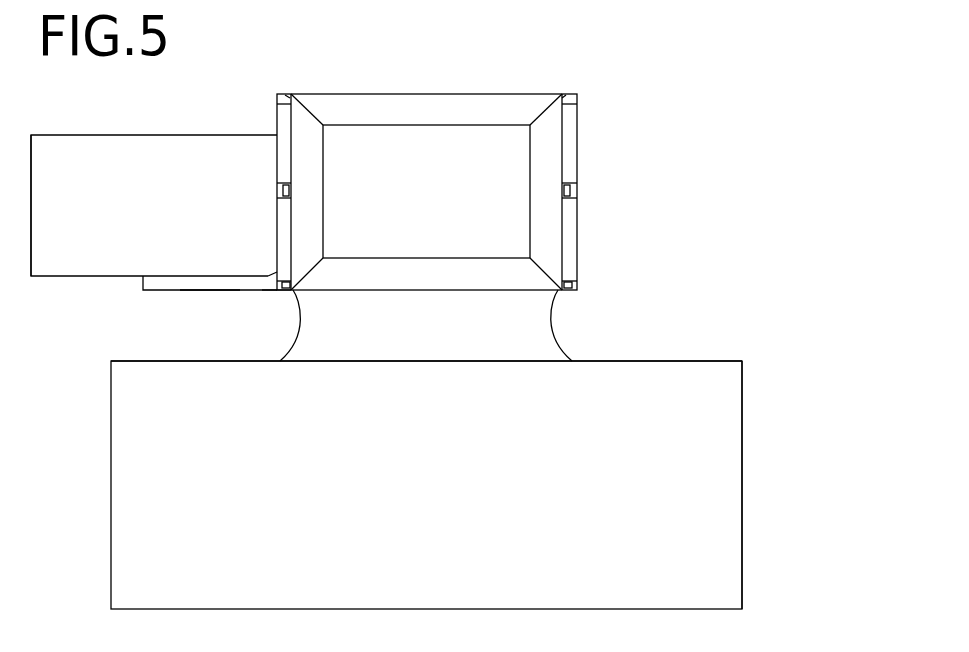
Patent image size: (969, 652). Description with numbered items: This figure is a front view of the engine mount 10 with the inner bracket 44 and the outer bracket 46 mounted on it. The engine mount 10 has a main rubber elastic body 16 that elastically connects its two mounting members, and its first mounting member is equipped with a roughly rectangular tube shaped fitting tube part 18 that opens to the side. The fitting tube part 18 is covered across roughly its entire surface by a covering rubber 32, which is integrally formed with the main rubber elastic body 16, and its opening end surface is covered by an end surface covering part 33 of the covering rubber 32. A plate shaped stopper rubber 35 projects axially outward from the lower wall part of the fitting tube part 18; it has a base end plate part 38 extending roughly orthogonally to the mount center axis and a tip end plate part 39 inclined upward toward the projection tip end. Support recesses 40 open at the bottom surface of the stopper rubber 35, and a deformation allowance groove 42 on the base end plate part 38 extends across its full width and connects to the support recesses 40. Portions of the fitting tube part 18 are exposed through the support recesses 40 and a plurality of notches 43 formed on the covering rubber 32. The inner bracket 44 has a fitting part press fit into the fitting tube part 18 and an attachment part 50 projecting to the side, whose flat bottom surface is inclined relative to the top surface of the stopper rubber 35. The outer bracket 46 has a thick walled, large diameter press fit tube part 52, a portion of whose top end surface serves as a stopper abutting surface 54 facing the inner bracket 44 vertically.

The engine mount 10 is at (452, 171).
The main rubber elastic body 16 is at (573, 350).
The fitting tube part 18 is at (573, 194).
The covering rubber 32 is at (470, 107).
The end surface covering part 33 is at (281, 195).
The stopper rubber 35 is at (167, 294).
The base end plate part 38 is at (270, 283).
The tip end plate part 39 is at (208, 282).
The support recess 40 is at (265, 284).
The deformation allowance groove 42 is at (282, 290).
The notch 43 is at (285, 95).
The inner bracket 44 is at (68, 132).
The outer bracket 46 is at (745, 539).
The attachment part 50 is at (142, 158).
The press fit tube part 52 is at (150, 510).
The stopper abutting surface 54 is at (162, 362).